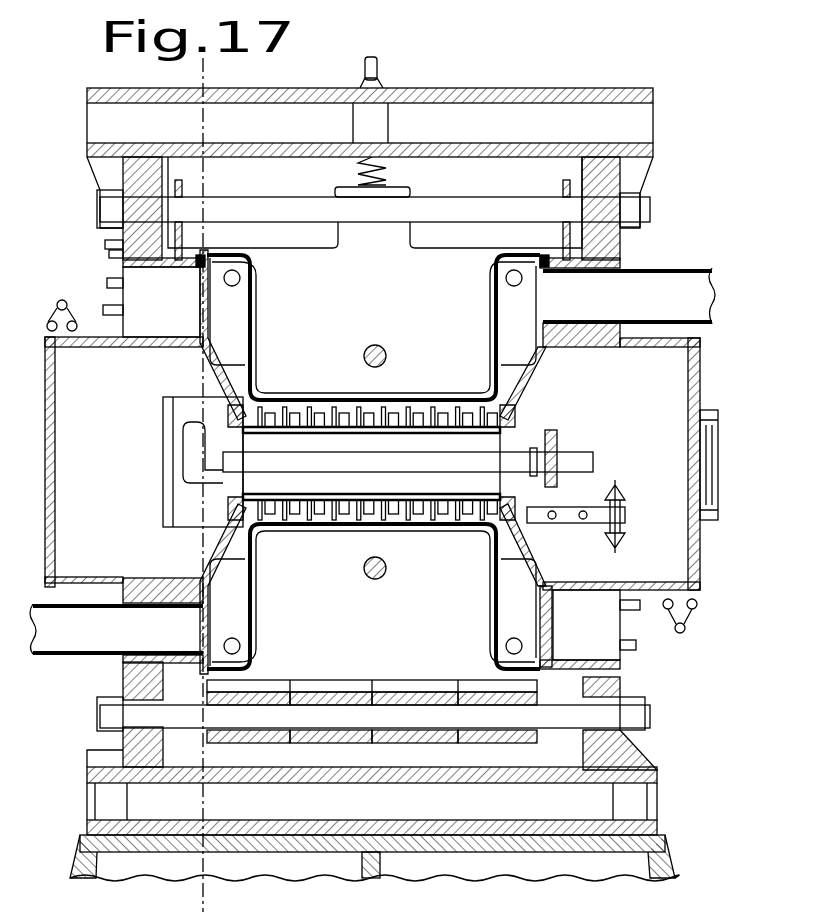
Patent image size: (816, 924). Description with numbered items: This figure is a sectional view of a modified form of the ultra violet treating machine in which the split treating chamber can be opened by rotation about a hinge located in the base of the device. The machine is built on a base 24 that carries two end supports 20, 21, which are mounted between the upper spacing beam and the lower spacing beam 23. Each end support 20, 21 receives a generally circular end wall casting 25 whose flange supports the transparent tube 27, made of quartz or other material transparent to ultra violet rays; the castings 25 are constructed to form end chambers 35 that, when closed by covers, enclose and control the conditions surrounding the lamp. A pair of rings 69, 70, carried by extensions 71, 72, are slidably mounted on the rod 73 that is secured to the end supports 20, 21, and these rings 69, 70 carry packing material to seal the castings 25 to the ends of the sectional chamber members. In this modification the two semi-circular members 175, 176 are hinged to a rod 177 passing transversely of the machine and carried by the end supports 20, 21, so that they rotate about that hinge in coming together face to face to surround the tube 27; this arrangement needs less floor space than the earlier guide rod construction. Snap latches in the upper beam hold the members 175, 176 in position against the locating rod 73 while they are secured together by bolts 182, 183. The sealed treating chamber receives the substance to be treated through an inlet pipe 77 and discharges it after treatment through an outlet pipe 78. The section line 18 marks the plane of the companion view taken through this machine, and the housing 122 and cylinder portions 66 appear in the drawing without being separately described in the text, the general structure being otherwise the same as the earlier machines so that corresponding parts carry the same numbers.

The section line 18- 18 is at (200, 73).
The end support 20 is at (130, 175).
The end support 21 is at (613, 178).
The lower spacing beam 23 is at (347, 783).
The base 24 is at (410, 870).
The end wall casting 25 is at (153, 268).
The transparent tube 27 is at (365, 495).
The end chamber 35 is at (381, 462).
The cylinder 66 is at (260, 352).
The ring 69 is at (185, 253).
The ring 70 is at (558, 254).
The extension 71 is at (182, 190).
The extension 72 is at (563, 190).
The rod 73 is at (457, 213).
The inlet pipe 77 is at (52, 640).
The outlet pipe 78 is at (682, 283).
The cover housing 122 is at (258, 152).
The semi-circular member 175 is at (318, 738).
The semi-circular member 176 is at (233, 738).
The hinge rod 177 is at (568, 723).
The bolt 182 is at (397, 356).
The bolt 183 is at (397, 568).